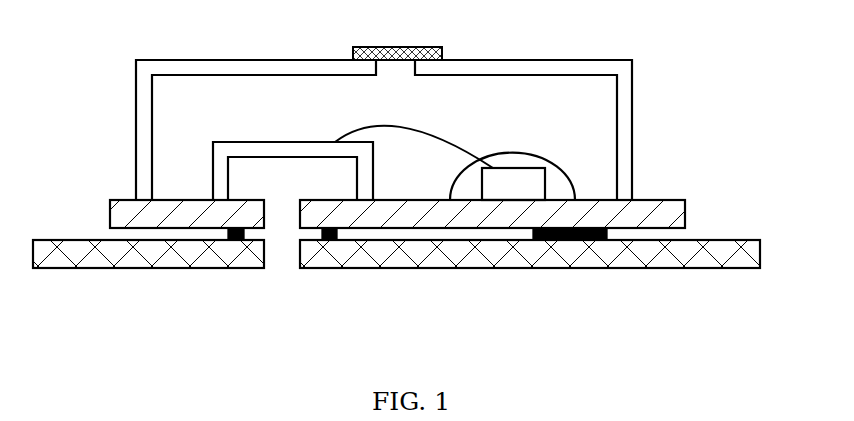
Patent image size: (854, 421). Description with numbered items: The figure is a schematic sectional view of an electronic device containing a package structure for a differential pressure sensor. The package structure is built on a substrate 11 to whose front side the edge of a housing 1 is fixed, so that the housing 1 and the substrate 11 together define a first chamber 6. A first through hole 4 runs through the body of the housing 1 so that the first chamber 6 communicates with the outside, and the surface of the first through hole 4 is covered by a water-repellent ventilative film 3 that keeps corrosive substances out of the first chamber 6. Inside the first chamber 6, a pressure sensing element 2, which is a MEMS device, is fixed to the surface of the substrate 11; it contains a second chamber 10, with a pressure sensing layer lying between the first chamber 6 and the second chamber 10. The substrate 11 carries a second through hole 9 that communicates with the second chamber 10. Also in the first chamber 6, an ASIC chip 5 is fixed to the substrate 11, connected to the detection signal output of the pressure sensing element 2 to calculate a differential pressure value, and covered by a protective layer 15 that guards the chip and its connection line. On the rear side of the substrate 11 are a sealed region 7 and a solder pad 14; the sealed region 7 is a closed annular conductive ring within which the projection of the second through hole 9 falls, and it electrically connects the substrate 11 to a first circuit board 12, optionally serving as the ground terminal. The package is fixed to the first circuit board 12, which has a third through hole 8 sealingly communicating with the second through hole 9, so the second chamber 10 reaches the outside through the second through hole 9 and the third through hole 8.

The housing 1 is at (182, 59).
The pressure sensing element 2 is at (282, 140).
The water-repellent ventilative film 3 is at (386, 46).
The first through hole 4 is at (396, 74).
The ASIC chip 5 is at (510, 172).
The first chamber 6 is at (205, 118).
The sealed region 7 is at (231, 234).
The third through hole 8 is at (278, 250).
The second through hole 9 is at (283, 213).
The second chamber 10 is at (338, 176).
The substrate 11 is at (486, 243).
The first circuit board 12 is at (660, 252).
The solder pad 14 is at (573, 243).
The protective layer 15 is at (538, 157).